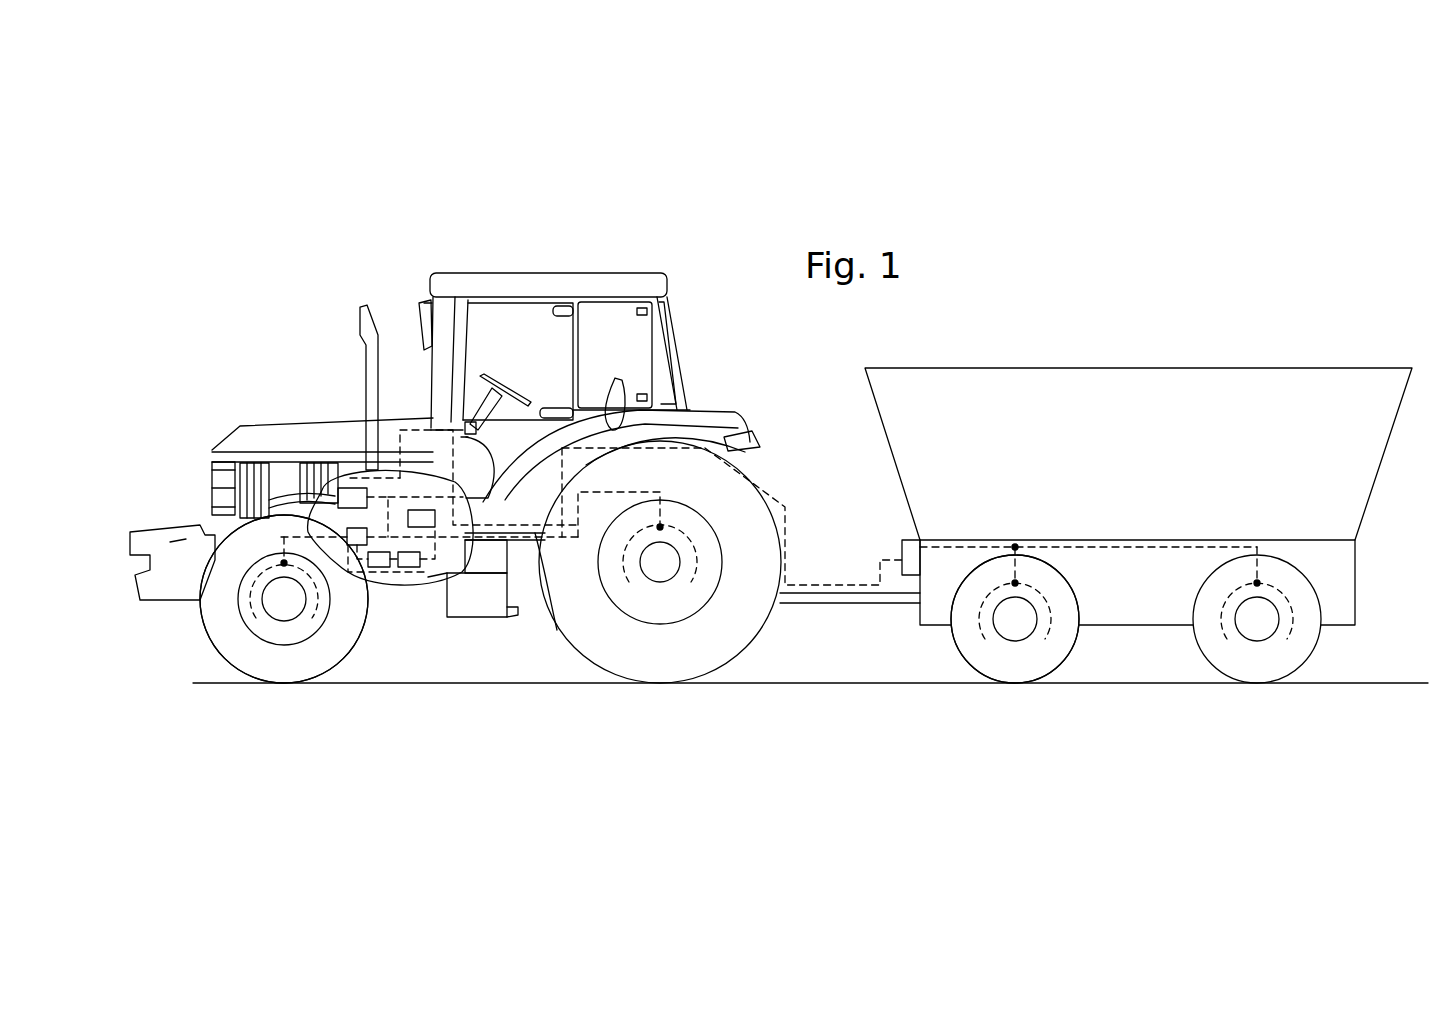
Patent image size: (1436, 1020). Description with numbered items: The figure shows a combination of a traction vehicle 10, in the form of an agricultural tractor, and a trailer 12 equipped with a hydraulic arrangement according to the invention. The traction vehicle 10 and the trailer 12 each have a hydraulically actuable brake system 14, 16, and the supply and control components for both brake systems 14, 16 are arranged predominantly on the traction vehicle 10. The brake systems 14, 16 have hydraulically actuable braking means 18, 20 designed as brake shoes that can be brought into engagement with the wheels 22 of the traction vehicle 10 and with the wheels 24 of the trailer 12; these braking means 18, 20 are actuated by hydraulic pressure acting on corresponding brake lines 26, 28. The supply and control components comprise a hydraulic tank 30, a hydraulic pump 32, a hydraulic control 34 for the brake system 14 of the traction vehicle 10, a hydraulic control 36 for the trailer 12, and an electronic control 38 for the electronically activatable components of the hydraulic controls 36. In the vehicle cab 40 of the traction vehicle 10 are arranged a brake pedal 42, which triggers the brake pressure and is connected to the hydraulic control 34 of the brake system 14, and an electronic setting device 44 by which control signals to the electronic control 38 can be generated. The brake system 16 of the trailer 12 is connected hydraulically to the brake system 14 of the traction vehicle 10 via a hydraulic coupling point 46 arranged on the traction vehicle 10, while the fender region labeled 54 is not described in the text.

The traction vehicle 10 is at (414, 362).
The trailer 12 is at (1104, 335).
The brake system 14 is at (305, 627).
The brake system 16 is at (1035, 636).
The braking means 18 is at (252, 612).
The braking means 20 is at (1220, 617).
The wheels 22 is at (312, 650).
The wheels 24 is at (980, 658).
The brake line 26 is at (310, 540).
The brake line 28 is at (1128, 546).
The hydraulic tank 30 is at (410, 567).
The hydraulic pump 32 is at (378, 567).
The hydraulic control 34 is at (347, 537).
The hydraulic control 36 is at (420, 518).
The electronic control 38 is at (340, 496).
The vehicle cab 40 is at (590, 340).
The brake pedal 42 is at (470, 492).
The electronic setting device 44 is at (470, 420).
The hydraulic coupling point 46 is at (740, 440).
The fender 54 is at (660, 447).